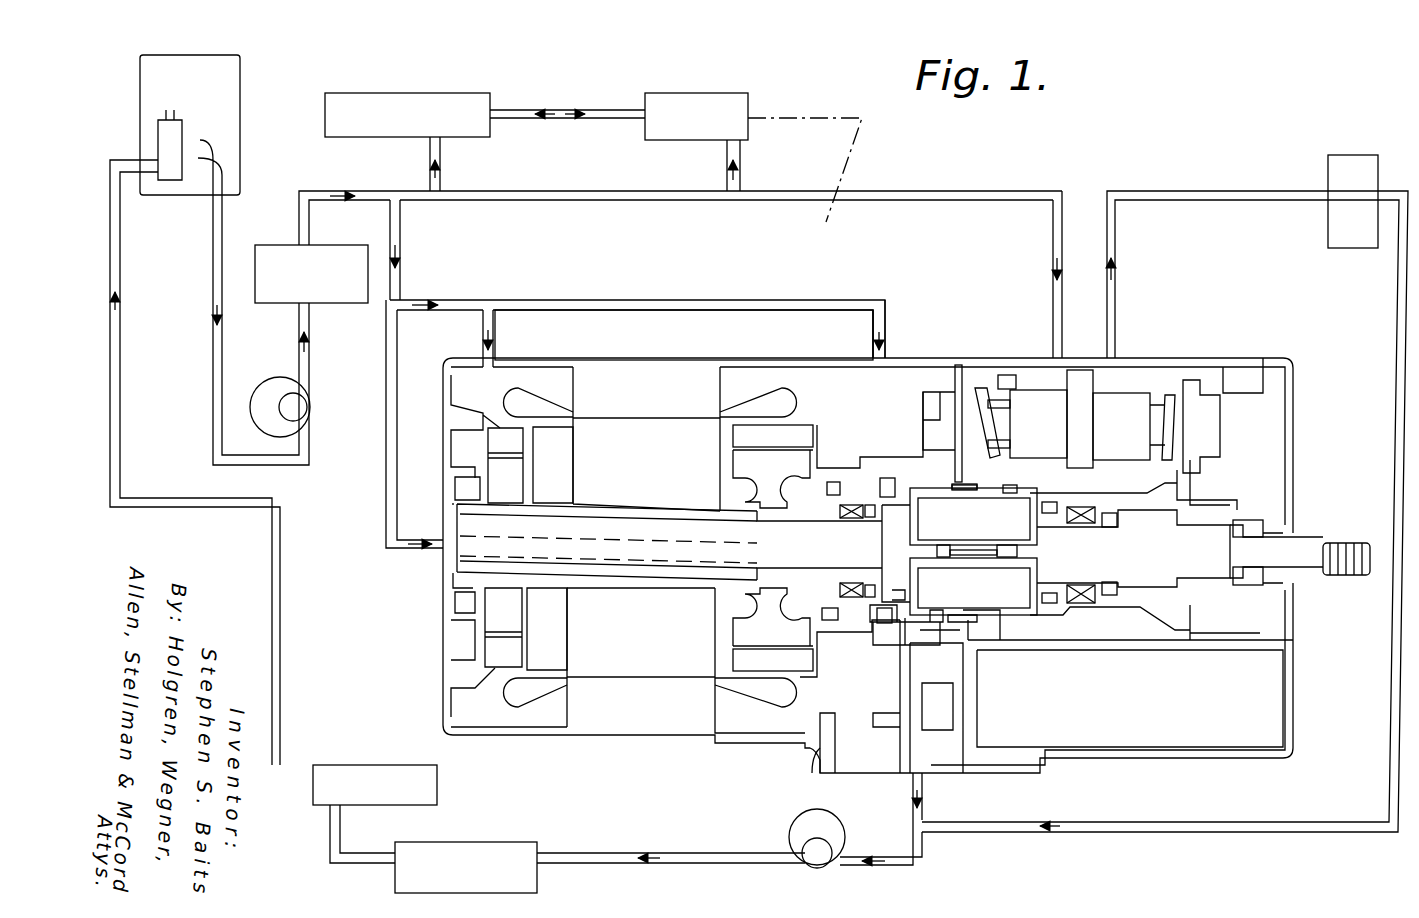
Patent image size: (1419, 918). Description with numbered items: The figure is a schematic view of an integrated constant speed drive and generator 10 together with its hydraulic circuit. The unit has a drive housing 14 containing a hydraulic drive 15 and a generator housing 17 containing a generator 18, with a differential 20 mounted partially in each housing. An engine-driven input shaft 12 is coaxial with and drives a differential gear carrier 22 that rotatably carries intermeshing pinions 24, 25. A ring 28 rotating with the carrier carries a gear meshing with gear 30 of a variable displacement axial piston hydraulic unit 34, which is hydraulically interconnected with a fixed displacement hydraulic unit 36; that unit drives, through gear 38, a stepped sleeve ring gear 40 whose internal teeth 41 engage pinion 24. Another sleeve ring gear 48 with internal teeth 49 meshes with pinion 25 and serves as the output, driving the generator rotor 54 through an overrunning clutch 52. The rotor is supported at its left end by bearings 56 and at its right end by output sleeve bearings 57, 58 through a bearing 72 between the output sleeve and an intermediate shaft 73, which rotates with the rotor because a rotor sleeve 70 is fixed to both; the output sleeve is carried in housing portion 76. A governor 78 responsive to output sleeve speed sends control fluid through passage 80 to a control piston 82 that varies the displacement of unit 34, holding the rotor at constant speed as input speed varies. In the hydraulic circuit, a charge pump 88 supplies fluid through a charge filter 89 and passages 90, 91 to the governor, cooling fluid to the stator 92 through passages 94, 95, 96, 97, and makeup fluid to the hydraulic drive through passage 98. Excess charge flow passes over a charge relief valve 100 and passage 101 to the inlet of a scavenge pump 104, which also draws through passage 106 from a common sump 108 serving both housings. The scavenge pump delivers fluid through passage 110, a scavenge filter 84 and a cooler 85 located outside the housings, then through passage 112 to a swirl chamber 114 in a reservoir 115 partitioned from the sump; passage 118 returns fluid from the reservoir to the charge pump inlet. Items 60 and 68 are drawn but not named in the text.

The integrated constant speed drive and generator 10 is at (1118, 765).
The input shaft 12 is at (1345, 540).
The drive housing 14 is at (1203, 760).
The hydraulic drive 15 is at (1155, 385).
The generator housing 17 is at (613, 736).
The generator 18 is at (512, 708).
The differential 20 is at (988, 625).
The differential gear carrier 22 is at (1180, 555).
The pinion 24 is at (973, 586).
The pinion 25 is at (973, 521).
The ring 28 is at (970, 482).
The gear 30 is at (948, 388).
The variable displacement axial piston hydraulic unit 34 is at (1034, 388).
The fixed displacement hydraulic unit 36 is at (1127, 388).
The gear 38 is at (1216, 420).
The stepped sleeve ring gear 40 is at (1140, 618).
The internal teeth 41 is at (1010, 487).
The sleeve ring gear 48 is at (893, 630).
The internal teeth 49 is at (930, 620).
The overrunning clutch 52 is at (848, 512).
The generator rotor 54 is at (478, 568).
The bearings 56 is at (455, 490).
The output sleeve bearing 57 is at (828, 590).
The output sleeve bearing 58 is at (884, 478).
The wall 60 is at (900, 593).
The bore 68 is at (758, 550).
The rotor sleeve 70 is at (620, 506).
The bearing 72 is at (870, 522).
The intermediate shaft 73 is at (780, 527).
The housing portion 76 is at (897, 455).
The governor 78 is at (405, 92).
The passage 80 is at (583, 109).
The control piston 82 is at (703, 92).
The scavenge filter 84 is at (492, 838).
The scavenge fluid cooler 85 is at (396, 762).
The charge pump 88 is at (276, 377).
The charge filter 89 is at (278, 243).
The passage 90 is at (321, 190).
The passage 91 is at (441, 168).
The stator 92 is at (640, 372).
The passage 94 is at (402, 237).
The passage 95 is at (440, 300).
The passage 96 is at (495, 338).
The passage 97 is at (883, 302).
The passage 98 is at (1062, 196).
The charge relief valve 100 is at (1328, 177).
The passage 101 is at (1395, 785).
The scavenge pump 104 is at (815, 868).
The passage 106 is at (924, 802).
The common sump 108 is at (838, 769).
The passage 110 is at (577, 848).
The passage 112 is at (122, 365).
The swirl chamber 114 is at (152, 137).
The reservoir 115 is at (193, 55).
The passage 118 is at (212, 292).